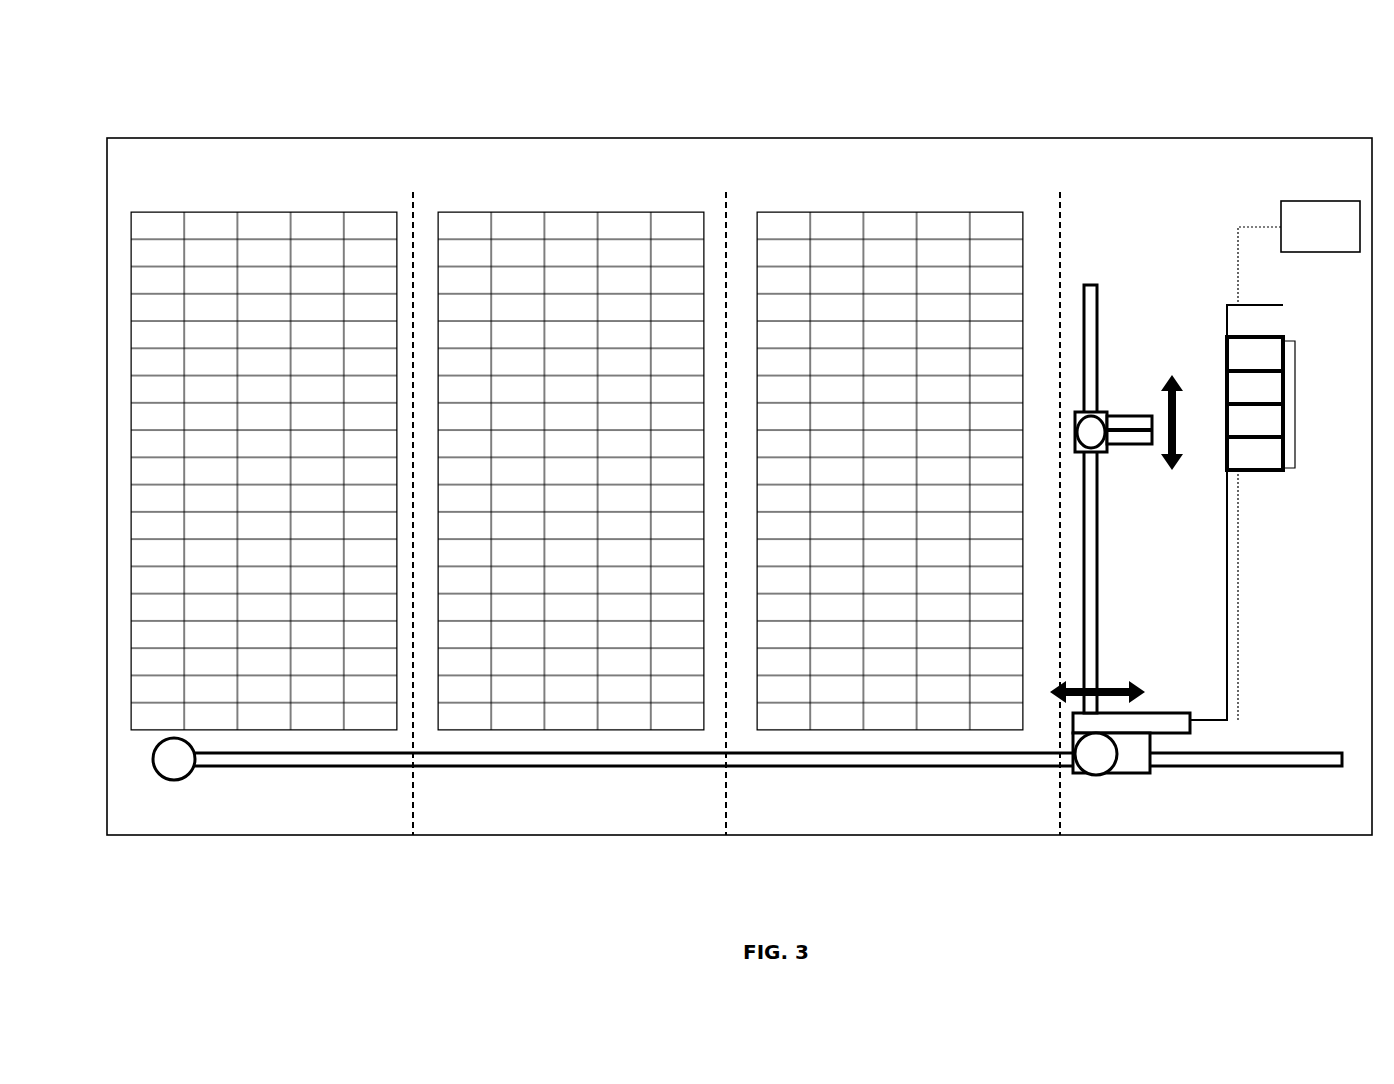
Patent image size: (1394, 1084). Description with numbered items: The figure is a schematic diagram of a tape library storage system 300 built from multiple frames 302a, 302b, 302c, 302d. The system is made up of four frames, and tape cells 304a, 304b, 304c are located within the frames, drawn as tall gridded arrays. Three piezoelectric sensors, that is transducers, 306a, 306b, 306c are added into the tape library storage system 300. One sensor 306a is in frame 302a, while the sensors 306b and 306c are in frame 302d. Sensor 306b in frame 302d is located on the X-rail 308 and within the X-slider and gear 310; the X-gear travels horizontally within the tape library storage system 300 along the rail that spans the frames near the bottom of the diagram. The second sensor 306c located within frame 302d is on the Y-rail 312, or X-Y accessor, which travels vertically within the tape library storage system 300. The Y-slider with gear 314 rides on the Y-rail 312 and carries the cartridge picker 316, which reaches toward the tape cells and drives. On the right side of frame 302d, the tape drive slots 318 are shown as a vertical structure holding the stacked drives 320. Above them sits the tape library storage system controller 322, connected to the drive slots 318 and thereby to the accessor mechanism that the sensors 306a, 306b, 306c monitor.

The tape library storage system 300 is at (138, 96).
The frame 302a is at (258, 859).
The frame 302b is at (571, 859).
The frame 302c is at (905, 859).
The frame 302d is at (1204, 859).
The tape cells 304a is at (268, 212).
The tape cells 304b is at (573, 212).
The tape cells 304c is at (895, 212).
The piezoelectric sensor 306a is at (178, 781).
The piezoelectric sensor 306b is at (1093, 776).
The piezoelectric sensor 306c is at (1075, 424).
The X-rail 308 is at (1222, 768).
The X-slider and gear 310 is at (1145, 775).
The Y-rail 312 is at (1099, 550).
The Y-slider with gear 314 is at (1103, 452).
The cartridge picker 316 is at (1112, 416).
The tape drive slots 318 is at (1240, 505).
The drives 320 is at (1300, 404).
The tape library storage system controller 322 is at (1318, 201).